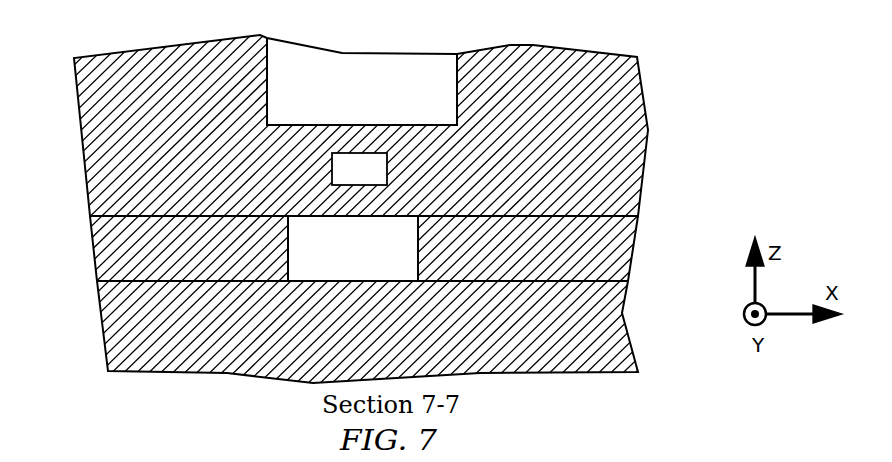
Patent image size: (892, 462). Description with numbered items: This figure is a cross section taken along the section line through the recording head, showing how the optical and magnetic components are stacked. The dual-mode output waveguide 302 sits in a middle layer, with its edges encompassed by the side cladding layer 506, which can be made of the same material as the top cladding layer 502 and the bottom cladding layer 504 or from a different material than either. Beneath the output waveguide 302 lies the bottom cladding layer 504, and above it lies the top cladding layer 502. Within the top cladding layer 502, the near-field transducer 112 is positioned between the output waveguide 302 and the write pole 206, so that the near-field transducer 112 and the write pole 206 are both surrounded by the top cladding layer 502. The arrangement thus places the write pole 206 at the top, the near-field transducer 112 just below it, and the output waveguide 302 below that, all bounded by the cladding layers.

The near-field transducer 112 is at (377, 182).
The write pole 206 is at (377, 72).
The dual-mode output waveguide 302 is at (368, 262).
The top cladding layer 502 is at (636, 174).
The bottom cladding layer 504 is at (625, 357).
The side cladding layer 506 is at (97, 262).